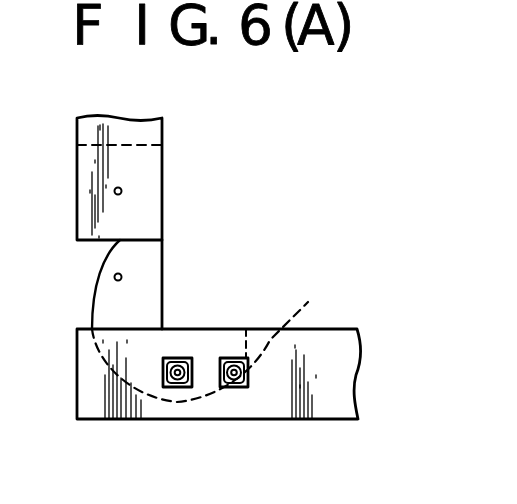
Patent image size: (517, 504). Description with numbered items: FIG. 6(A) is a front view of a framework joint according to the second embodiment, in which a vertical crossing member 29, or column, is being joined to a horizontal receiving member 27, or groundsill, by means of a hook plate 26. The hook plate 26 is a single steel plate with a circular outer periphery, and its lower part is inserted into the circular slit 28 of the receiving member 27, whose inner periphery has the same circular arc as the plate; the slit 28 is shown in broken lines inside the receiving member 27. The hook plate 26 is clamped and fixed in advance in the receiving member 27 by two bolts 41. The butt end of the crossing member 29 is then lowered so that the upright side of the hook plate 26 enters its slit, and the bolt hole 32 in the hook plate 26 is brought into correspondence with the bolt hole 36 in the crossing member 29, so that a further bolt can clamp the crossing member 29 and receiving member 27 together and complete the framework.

The hook plate 26 is at (92, 297).
The receiving member 27 is at (268, 400).
The slit 28 is at (216, 339).
The crossing member 29 is at (139, 118).
The bolt hole 32 is at (122, 277).
The bolt hole 36 is at (122, 191).
The bolts 41 is at (180, 383).